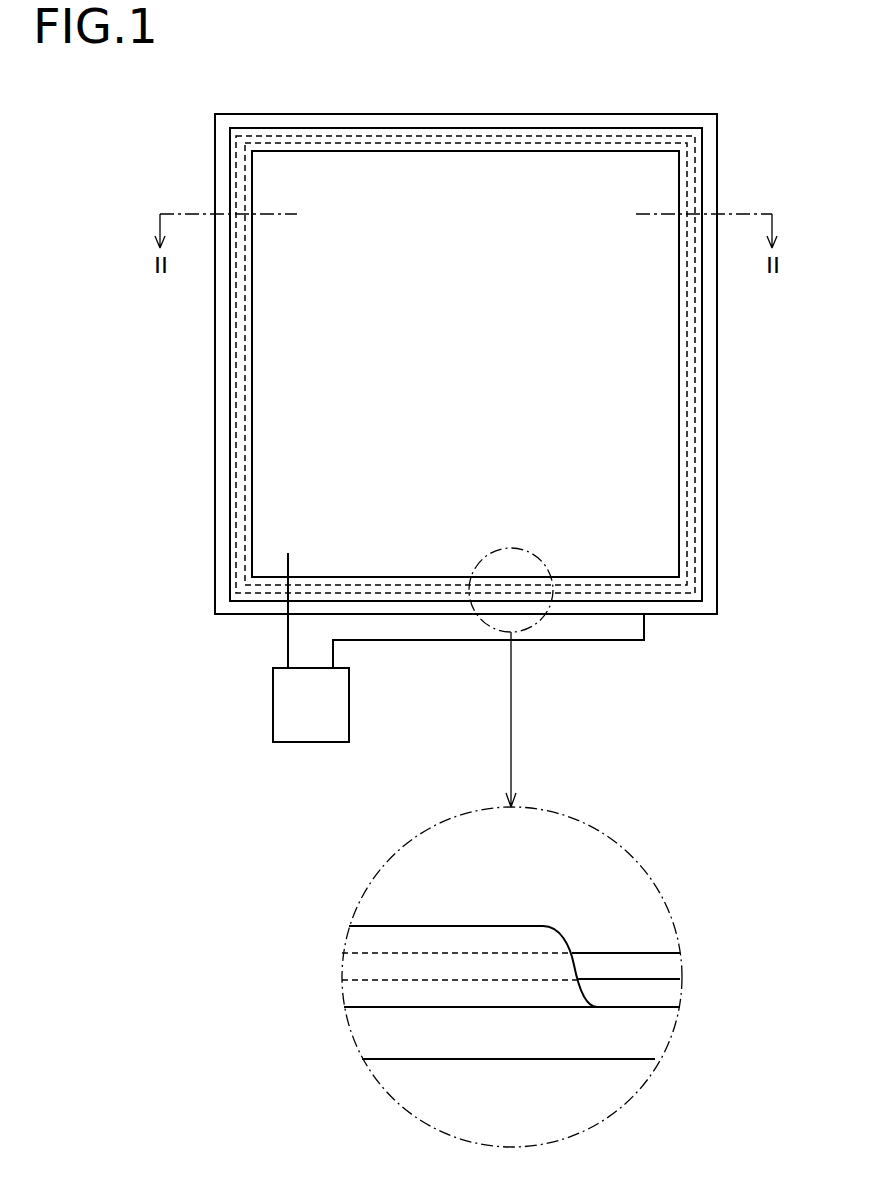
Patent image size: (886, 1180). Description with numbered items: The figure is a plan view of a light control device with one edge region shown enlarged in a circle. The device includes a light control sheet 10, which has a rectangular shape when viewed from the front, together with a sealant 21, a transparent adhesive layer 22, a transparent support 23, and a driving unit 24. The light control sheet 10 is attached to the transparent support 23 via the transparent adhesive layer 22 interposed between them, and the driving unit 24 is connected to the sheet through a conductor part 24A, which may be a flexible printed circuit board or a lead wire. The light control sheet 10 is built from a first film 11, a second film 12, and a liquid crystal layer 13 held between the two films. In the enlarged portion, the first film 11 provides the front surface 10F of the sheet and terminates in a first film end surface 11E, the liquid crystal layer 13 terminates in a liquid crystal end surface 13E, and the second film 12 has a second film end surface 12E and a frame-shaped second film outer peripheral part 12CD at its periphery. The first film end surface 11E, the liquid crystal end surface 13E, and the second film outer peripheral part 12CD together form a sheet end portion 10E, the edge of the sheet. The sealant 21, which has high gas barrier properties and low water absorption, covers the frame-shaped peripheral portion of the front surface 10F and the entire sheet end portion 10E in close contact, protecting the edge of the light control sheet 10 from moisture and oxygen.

The light control sheet 10 is at (783, 383).
The first film 11 is at (700, 398).
The liquid crystal layer 13 is at (697, 421).
The second film 12 is at (697, 447).
The front surface 10F is at (441, 300).
The sealant 21 is at (693, 505).
The transparent adhesive layer 22 is at (702, 545).
The transparent support 23 is at (712, 588).
The driving unit 24 is at (350, 703).
The conductor part 24A is at (287, 644).
The first film end surface 11E is at (672, 955).
The liquid crystal end surface 13E is at (672, 971).
The second film outer peripheral part 12CD is at (672, 996).
The second film end surface 12E is at (640, 1008).
The sheet end portion 10E is at (768, 933).